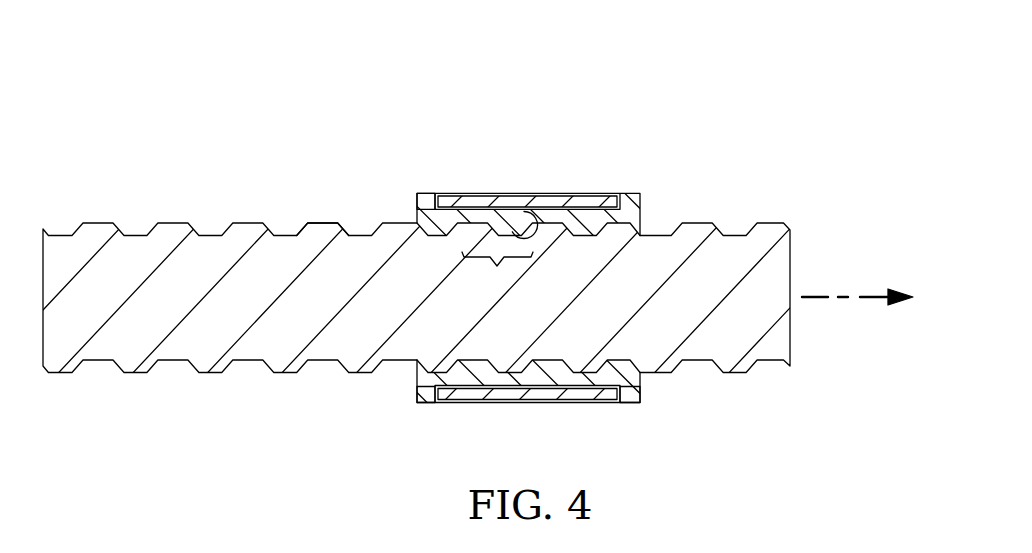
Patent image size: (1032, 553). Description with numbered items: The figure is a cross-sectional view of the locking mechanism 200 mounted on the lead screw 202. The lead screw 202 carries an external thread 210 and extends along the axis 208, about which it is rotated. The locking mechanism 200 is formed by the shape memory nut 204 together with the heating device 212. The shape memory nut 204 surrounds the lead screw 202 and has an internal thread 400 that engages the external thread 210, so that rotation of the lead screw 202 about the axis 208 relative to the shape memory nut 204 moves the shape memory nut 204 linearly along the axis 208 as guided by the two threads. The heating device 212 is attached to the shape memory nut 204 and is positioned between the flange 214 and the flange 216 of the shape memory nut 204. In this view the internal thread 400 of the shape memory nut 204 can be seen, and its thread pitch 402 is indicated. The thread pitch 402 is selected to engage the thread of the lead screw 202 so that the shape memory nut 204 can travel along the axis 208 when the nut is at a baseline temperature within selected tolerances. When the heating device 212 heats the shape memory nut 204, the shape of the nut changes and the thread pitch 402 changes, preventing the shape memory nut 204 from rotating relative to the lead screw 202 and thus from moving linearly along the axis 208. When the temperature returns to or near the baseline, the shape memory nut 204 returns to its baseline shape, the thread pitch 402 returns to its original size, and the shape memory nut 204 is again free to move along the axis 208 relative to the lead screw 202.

The locking mechanism 200 is at (613, 110).
The lead screw 202 is at (248, 222).
The shape memory nut 204 is at (421, 183).
The axis 208 is at (843, 296).
The external thread 210 is at (319, 214).
The heating device 212 is at (593, 192).
The flange 214 is at (427, 403).
The flange 216 is at (626, 403).
The internal thread 400 is at (524, 212).
The thread pitch 402 is at (497, 277).